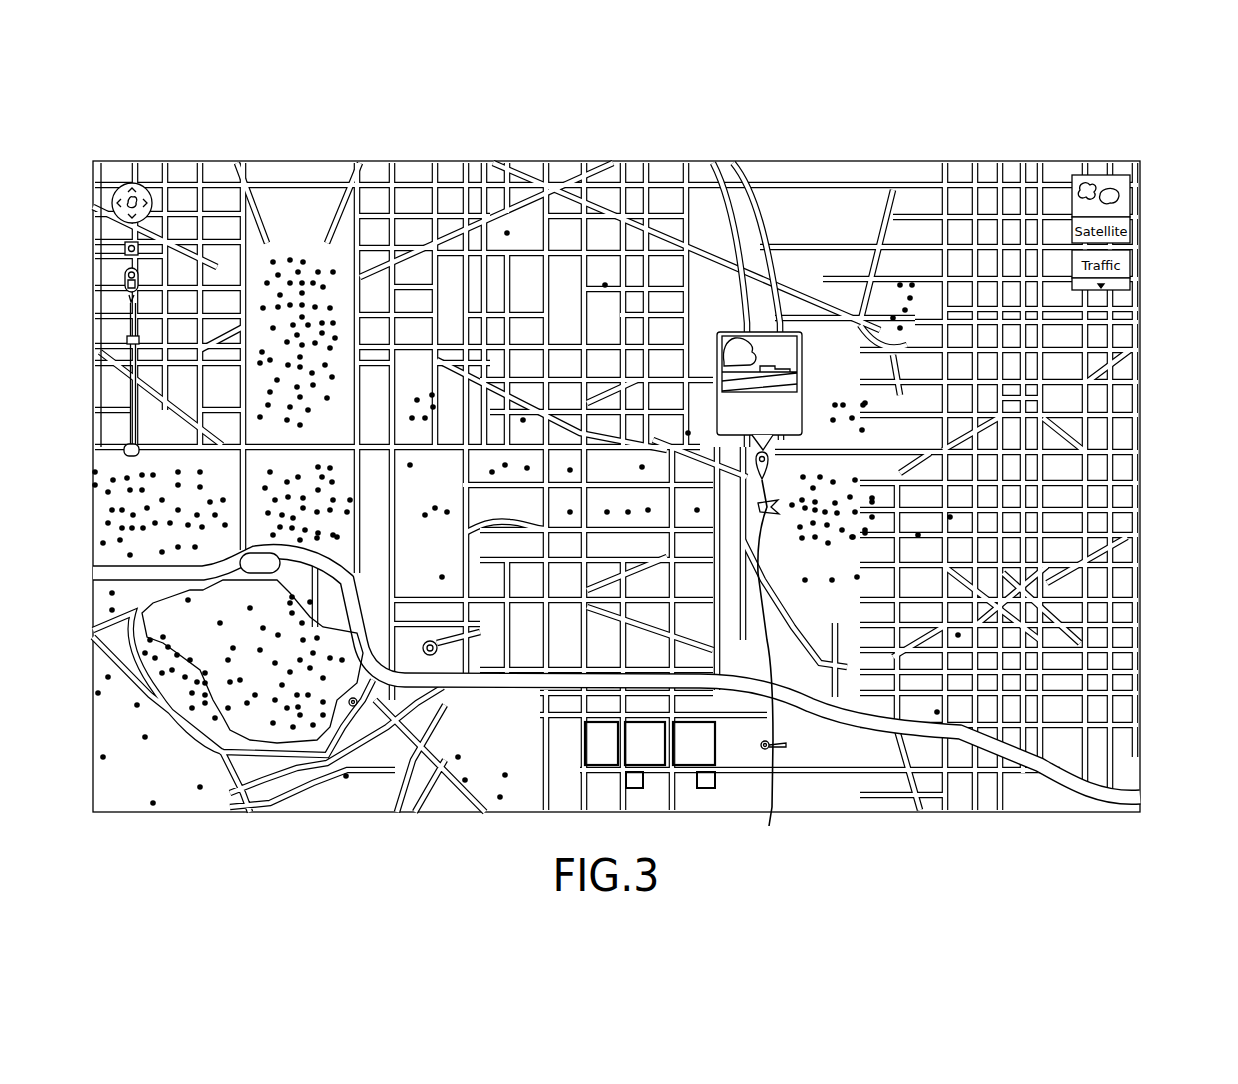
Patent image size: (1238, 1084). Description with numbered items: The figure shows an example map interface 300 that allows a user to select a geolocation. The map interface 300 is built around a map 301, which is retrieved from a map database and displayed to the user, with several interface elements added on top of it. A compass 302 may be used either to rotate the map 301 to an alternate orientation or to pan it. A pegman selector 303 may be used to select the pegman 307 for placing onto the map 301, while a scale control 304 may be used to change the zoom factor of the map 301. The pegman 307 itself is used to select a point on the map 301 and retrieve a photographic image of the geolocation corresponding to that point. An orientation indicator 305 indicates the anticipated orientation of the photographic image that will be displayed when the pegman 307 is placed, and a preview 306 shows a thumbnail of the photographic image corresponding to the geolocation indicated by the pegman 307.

The map interface 300 is at (1189, 112).
The map 301 is at (616, 487).
The compass 302 is at (120, 185).
The pegman selector 303 is at (124, 283).
The scale control 304 is at (128, 326).
The orientation indicator 305 is at (769, 826).
The preview 306 is at (738, 163).
The pegman 307 is at (790, 444).